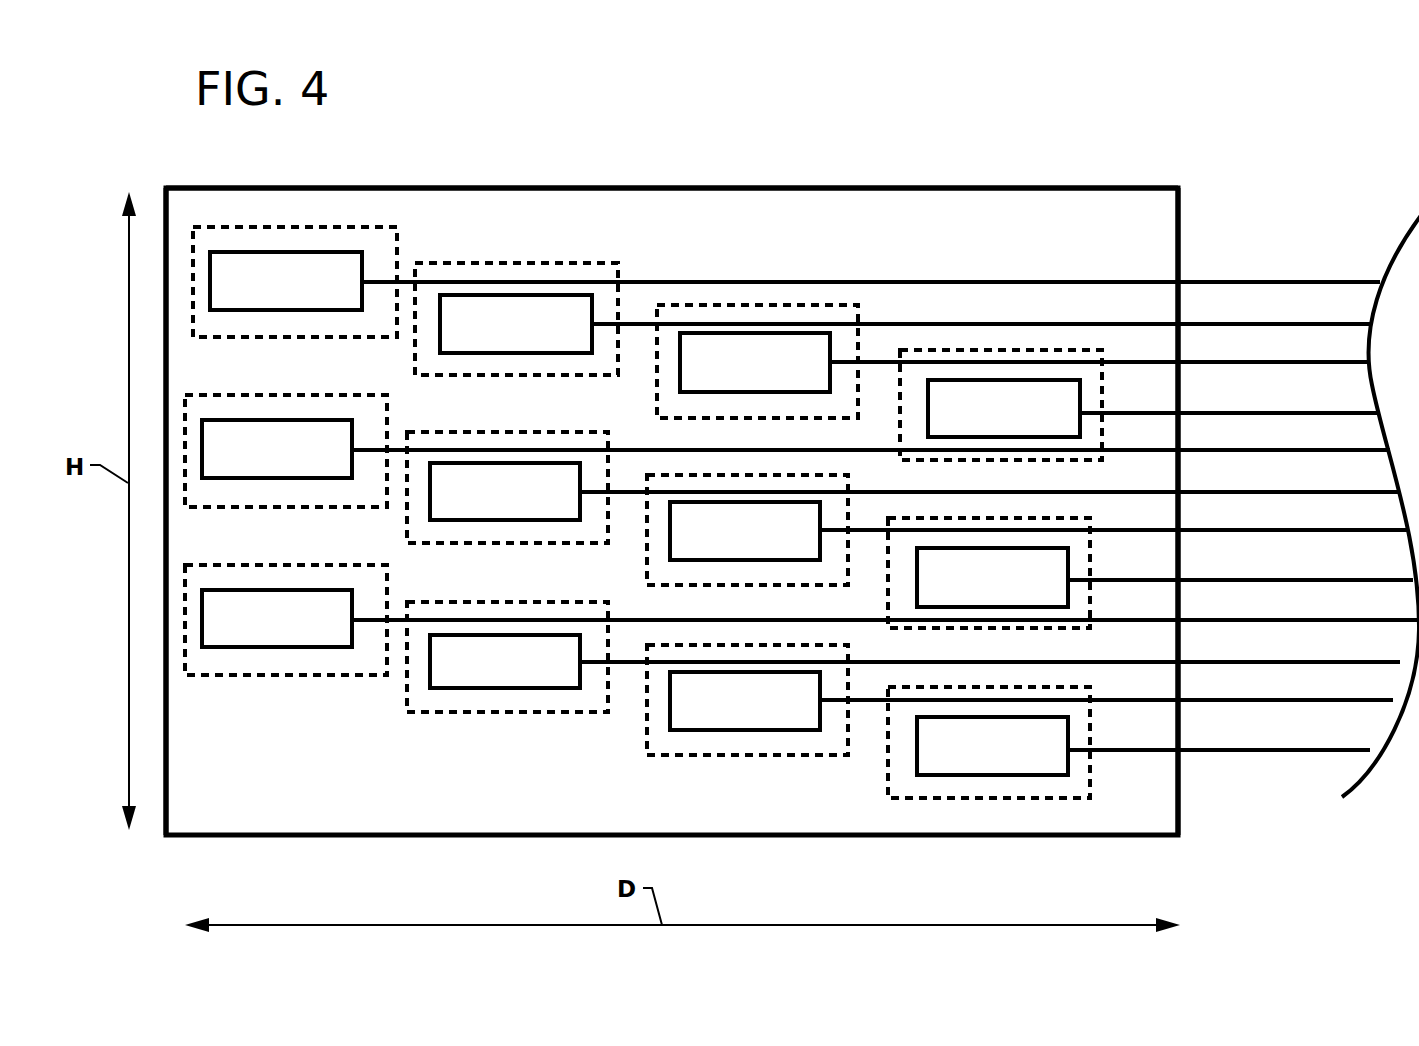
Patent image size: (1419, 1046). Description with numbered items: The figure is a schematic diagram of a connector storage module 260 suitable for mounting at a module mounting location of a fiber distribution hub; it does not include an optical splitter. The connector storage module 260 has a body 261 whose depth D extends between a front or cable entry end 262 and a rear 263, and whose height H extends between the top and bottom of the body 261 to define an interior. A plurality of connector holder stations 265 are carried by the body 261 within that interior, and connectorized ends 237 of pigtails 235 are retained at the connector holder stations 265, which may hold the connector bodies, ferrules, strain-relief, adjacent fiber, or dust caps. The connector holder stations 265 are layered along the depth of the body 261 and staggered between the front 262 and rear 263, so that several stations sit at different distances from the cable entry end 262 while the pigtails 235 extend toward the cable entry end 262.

The pigtails 235 is at (885, 503).
The connectorized ends 237 is at (641, 467).
The connector storage module 260 is at (980, 160).
The body 261 is at (672, 155).
The front (cable entry end) 262 is at (1233, 487).
The rear 263 is at (176, 545).
The connector holder stations 265 is at (659, 556).